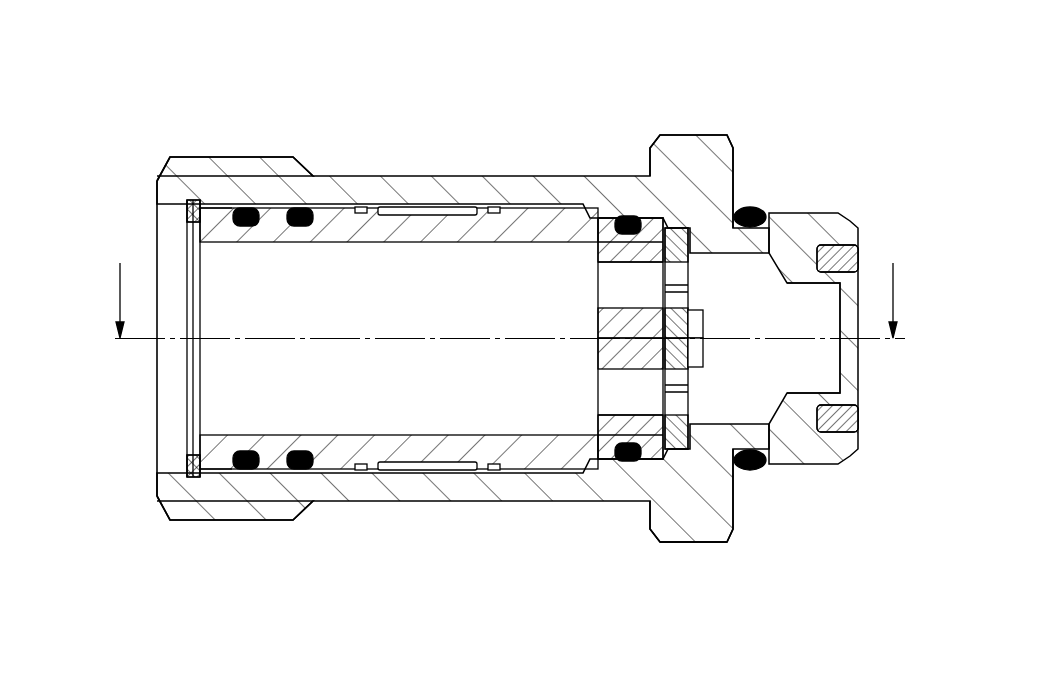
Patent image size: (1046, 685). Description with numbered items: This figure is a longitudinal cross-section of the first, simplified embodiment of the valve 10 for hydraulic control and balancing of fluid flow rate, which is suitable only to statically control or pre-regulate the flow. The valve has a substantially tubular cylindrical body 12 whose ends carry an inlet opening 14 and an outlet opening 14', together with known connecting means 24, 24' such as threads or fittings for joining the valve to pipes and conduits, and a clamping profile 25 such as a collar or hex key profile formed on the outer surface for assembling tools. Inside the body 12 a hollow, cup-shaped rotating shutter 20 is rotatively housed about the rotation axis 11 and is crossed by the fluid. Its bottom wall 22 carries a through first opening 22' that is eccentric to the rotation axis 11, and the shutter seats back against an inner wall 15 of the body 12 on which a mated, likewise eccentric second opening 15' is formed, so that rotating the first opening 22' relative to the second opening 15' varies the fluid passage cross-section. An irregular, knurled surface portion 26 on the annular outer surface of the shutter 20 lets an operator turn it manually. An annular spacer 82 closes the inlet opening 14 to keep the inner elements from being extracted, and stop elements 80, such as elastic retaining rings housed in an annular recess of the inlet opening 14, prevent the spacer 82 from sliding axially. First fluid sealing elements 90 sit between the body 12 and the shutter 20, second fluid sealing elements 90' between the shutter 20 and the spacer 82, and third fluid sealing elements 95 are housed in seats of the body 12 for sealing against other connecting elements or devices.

The valve for hydraulic control and balancing of fluid flow rate 10 is at (790, 48).
The rotation axis 11 is at (413, 335).
The body 12 is at (684, 113).
The inlet opening 14 is at (130, 338).
The outlet opening 14' is at (865, 352).
The inner wall 15 is at (800, 279).
The second opening 15' is at (738, 452).
The rotating shutter 20 is at (517, 178).
The bottom wall 22 is at (628, 210).
The first opening 22' is at (591, 449).
The connecting means 24 is at (228, 293).
The connecting means 24' is at (856, 298).
The clamping profile 25 is at (690, 543).
The irregular surface portion 26 is at (458, 466).
The stop elements 80 is at (188, 217).
The spacer 82 is at (230, 186).
The first fluid sealing elements 90 is at (464, 393).
The second fluid sealing elements 90' is at (257, 399).
The third fluid sealing elements 95 is at (752, 206).